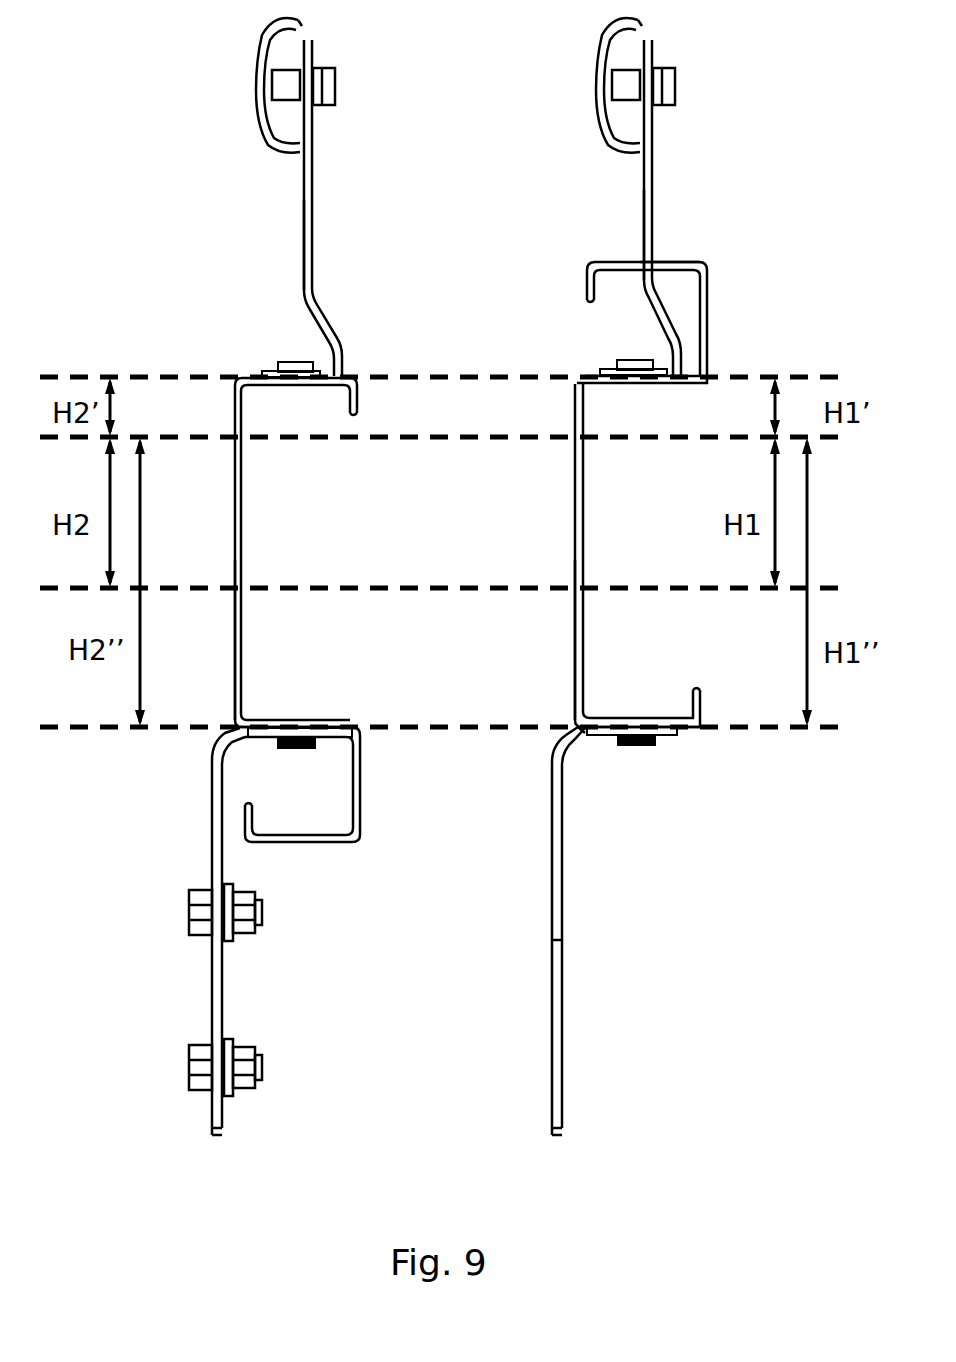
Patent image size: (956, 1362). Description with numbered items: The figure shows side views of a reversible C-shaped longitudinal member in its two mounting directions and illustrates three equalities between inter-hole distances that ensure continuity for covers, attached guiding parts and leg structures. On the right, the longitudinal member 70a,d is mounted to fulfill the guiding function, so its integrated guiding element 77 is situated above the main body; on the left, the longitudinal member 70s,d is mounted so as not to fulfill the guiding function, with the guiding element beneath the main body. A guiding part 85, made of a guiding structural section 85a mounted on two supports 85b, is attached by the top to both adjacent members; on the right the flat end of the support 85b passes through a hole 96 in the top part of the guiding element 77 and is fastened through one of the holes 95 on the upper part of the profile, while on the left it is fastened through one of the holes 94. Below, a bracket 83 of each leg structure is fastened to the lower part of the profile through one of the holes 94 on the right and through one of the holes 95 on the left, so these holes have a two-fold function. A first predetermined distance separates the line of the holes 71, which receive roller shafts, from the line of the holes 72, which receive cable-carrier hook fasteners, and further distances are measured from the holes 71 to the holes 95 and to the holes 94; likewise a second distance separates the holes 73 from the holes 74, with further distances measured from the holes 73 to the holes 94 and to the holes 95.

The guiding structural section 85a is at (255, 63).
The guiding part 85 is at (300, 187).
The support 85b is at (300, 307).
The hole 96 is at (660, 258).
The guiding element 77 is at (707, 313).
The holes 71 is at (583, 437).
The holes 72 is at (583, 588).
The holes 73 is at (240, 437).
The holes 74 is at (240, 588).
The holes 94 is at (290, 388).
The holes 95 is at (300, 723).
The bracket 83 is at (212, 830).
The longitudinal member mounted so as not to fulfill the guiding function 70s,d is at (323, 845).
The longitudinal member mounted to fulfill the guiding function 70a,d is at (700, 727).